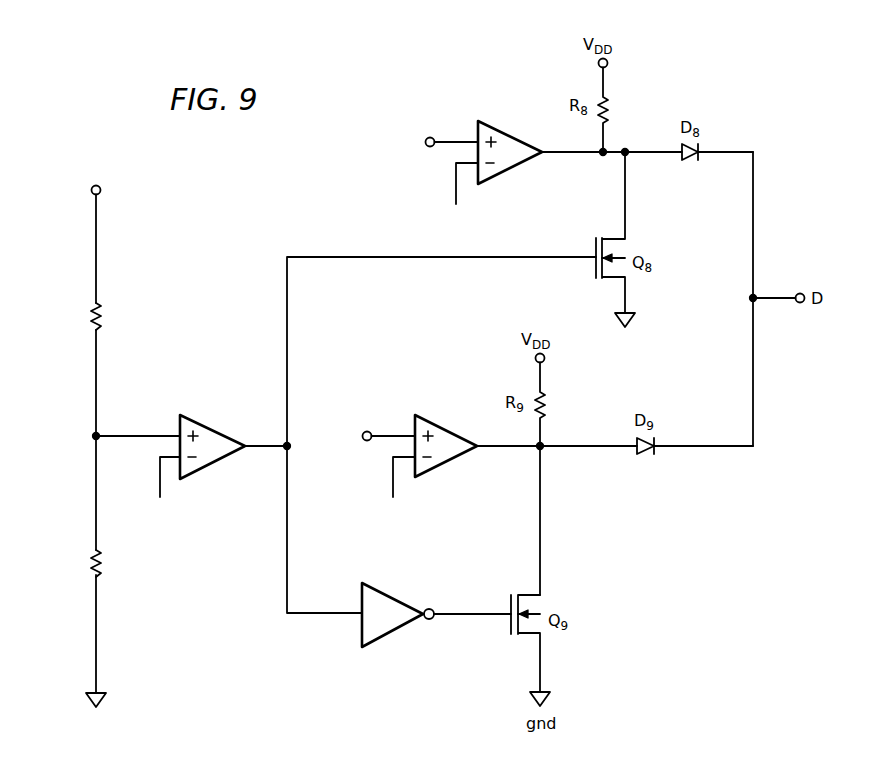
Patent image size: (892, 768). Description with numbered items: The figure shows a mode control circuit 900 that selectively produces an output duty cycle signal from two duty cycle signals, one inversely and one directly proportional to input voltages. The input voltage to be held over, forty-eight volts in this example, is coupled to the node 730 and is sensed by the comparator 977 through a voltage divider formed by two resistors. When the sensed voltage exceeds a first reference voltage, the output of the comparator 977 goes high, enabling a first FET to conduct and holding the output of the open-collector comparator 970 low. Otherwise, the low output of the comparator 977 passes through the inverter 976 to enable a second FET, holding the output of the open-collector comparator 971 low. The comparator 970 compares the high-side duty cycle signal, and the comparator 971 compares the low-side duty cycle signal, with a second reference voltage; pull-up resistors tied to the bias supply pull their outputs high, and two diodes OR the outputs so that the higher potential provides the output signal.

The node 730 is at (91, 193).
The mode control circuit 900 is at (773, 85).
The comparator 970 is at (510, 133).
The comparator 971 is at (447, 467).
The inverter 976 is at (393, 637).
The comparator 977 is at (212, 428).